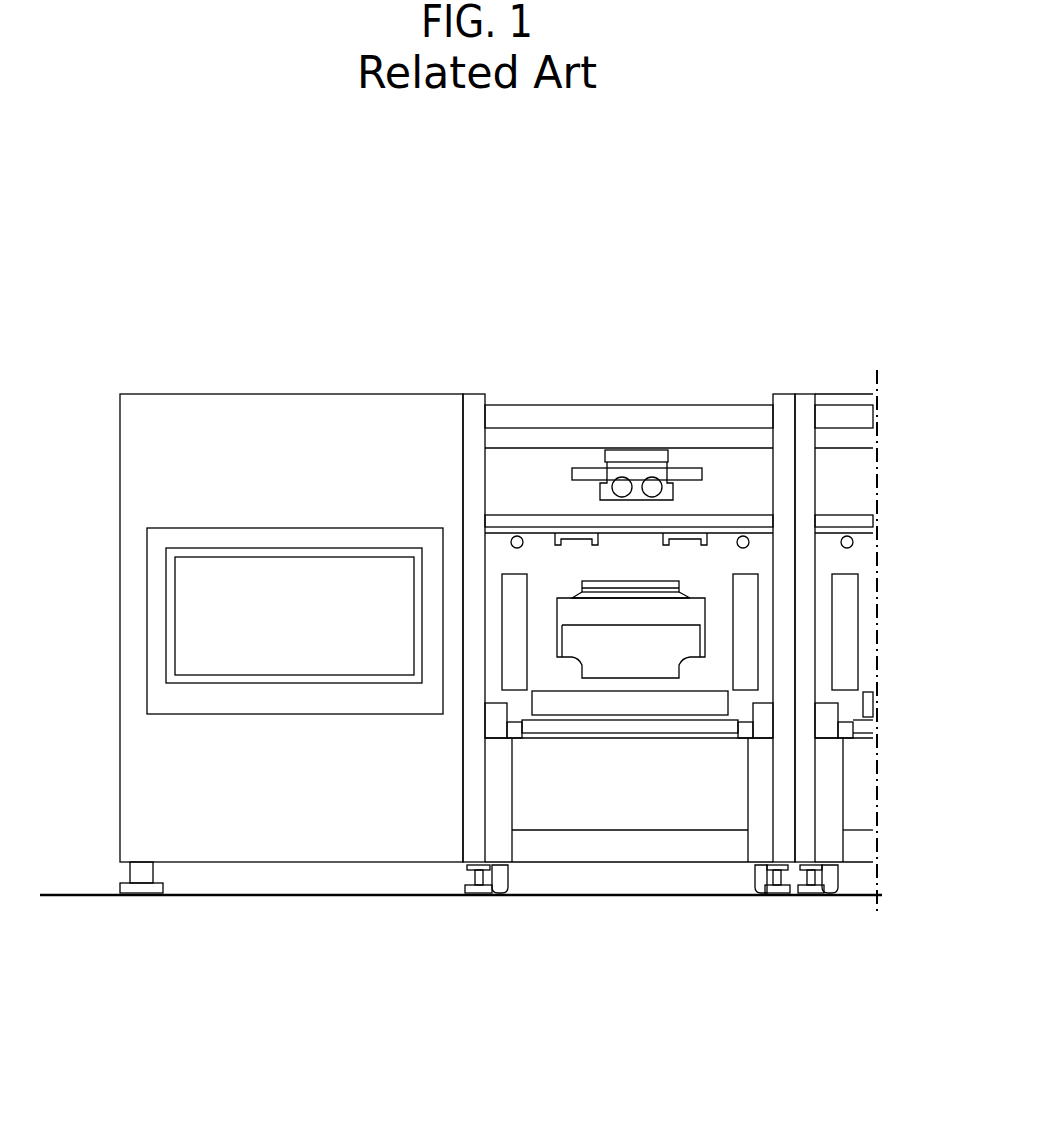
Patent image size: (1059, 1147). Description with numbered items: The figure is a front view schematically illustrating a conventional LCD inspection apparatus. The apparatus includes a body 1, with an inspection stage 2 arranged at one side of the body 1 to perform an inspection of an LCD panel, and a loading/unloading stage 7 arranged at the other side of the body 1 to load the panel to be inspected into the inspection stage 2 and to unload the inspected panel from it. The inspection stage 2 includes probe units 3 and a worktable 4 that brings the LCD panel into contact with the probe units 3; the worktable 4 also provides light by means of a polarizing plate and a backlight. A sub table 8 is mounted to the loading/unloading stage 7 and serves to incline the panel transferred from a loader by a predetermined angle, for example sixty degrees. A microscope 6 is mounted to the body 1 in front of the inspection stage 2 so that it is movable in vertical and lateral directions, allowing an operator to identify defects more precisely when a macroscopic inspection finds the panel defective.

The body 1 is at (507, 403).
The inspection stage 2 is at (584, 395).
The probe units 3 is at (513, 653).
The worktable 4 is at (626, 652).
The microscope 6 is at (639, 462).
The loading/unloading stage 7 is at (303, 436).
The sub table 8 is at (191, 624).